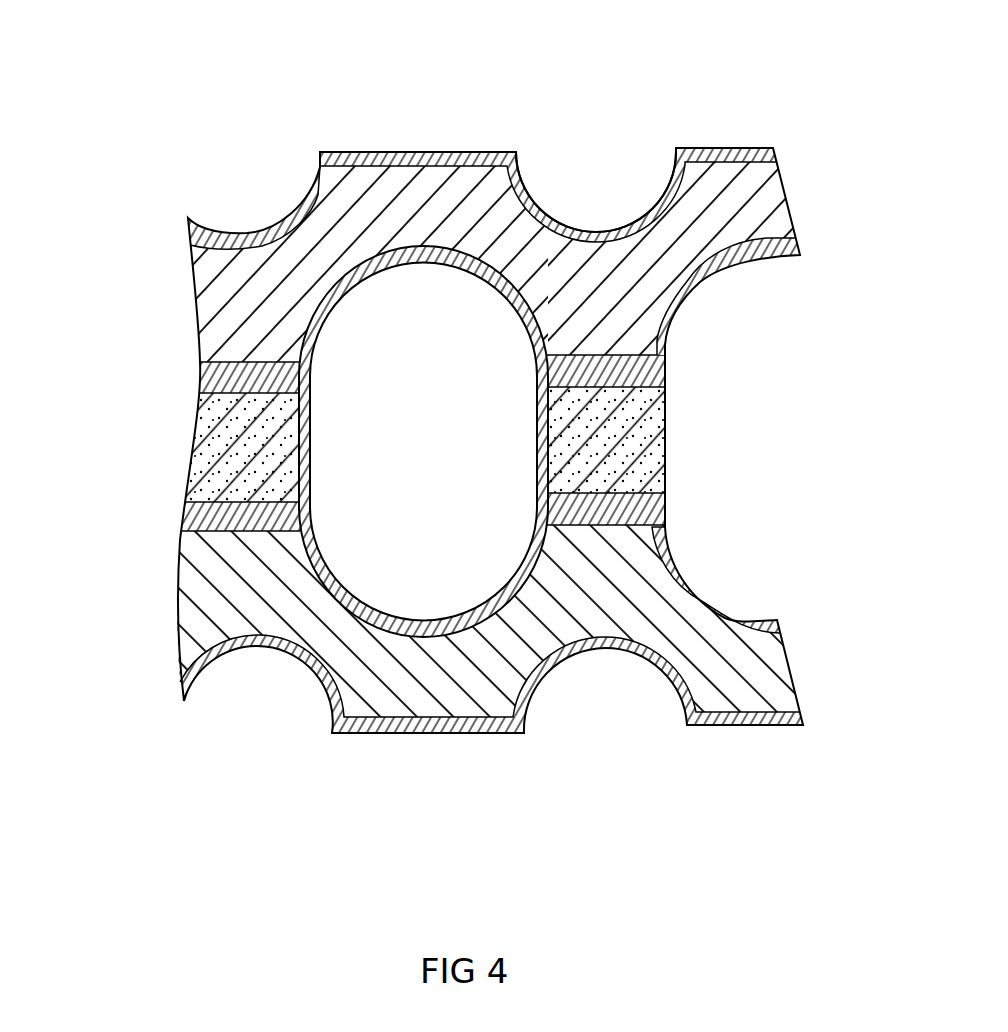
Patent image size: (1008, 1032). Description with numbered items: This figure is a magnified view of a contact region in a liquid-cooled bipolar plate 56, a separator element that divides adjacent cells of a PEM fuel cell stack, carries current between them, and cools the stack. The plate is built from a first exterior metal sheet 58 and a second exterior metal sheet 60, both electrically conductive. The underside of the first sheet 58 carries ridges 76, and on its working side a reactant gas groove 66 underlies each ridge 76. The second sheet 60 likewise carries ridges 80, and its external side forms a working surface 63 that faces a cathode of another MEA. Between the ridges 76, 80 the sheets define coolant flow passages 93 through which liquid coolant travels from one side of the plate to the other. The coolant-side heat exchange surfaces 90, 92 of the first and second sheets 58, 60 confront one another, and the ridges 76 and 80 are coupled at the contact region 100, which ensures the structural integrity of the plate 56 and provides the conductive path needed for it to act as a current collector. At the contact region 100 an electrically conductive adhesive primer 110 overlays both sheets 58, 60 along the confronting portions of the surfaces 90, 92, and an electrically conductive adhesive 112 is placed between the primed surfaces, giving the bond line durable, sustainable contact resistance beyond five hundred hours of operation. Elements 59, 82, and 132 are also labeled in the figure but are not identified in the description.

The bipolar plate 56 is at (132, 128).
The first exterior metal sheet 58 is at (768, 195).
The top surface 59 is at (418, 137).
The reactant gas groove 66 is at (598, 172).
The ridges 76 is at (628, 328).
The heat exchange surface 92 is at (632, 396).
The electrically conductive adhesive 112 is at (630, 440).
The heat exchange surface 90 is at (622, 486).
The ridges 80 is at (630, 563).
The second exterior metal sheet 60 is at (768, 670).
The electrically conductive adhesive primer 110 is at (180, 523).
The lower wall 82 is at (333, 537).
The coolant flow passages 93 is at (390, 582).
The bottom wall 132 is at (376, 693).
The working surface 63 is at (408, 750).
The contact region 100 is at (535, 438).